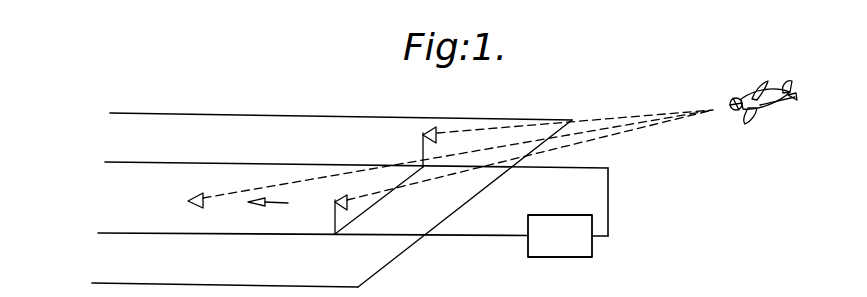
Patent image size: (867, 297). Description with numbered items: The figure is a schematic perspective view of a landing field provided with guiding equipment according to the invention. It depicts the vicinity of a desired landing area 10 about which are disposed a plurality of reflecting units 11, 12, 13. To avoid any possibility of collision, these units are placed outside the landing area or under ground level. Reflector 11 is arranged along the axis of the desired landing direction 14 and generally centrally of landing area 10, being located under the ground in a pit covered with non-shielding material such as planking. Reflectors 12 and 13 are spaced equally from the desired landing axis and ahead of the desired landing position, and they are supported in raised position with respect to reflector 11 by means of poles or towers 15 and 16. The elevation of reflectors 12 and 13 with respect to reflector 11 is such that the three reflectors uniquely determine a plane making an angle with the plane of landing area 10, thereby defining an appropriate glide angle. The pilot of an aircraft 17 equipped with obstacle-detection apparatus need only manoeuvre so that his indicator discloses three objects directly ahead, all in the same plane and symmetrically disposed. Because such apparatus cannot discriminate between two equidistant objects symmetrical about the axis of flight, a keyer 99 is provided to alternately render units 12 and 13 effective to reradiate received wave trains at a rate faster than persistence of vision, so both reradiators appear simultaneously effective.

The landing area 10 is at (219, 235).
The reflecting unit 11 is at (193, 197).
The reflecting unit 12 is at (348, 206).
The reflecting unit 13 is at (437, 131).
The desired landing direction 14 is at (276, 203).
The pole or tower 15 is at (334, 222).
The pole or tower 16 is at (423, 150).
The aircraft 17 is at (781, 112).
The keyer 99 is at (556, 215).